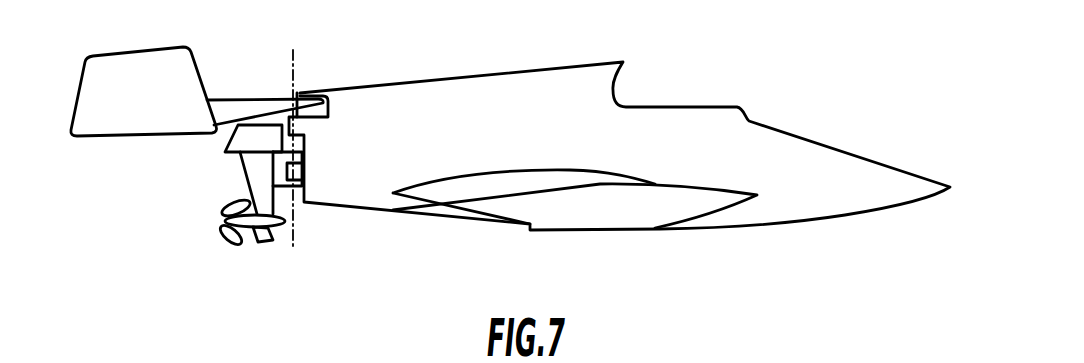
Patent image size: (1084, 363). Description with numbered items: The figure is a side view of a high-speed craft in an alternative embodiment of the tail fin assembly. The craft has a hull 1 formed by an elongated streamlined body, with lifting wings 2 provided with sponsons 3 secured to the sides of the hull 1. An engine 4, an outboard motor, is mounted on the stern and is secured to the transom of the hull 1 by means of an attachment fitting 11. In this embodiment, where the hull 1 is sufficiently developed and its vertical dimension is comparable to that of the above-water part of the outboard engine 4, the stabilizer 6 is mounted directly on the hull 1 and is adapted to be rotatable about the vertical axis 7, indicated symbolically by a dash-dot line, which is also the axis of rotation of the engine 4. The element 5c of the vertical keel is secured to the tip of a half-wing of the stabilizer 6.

The hull 1 is at (835, 197).
The lifting wings 2 is at (445, 188).
The sponsons 3 is at (591, 210).
The engine 4 is at (230, 142).
The element of the vertical keel 5c is at (188, 85).
The stabilizer 6 is at (240, 110).
The vertical axis 7 is at (293, 68).
The attachment fitting 11 is at (283, 167).